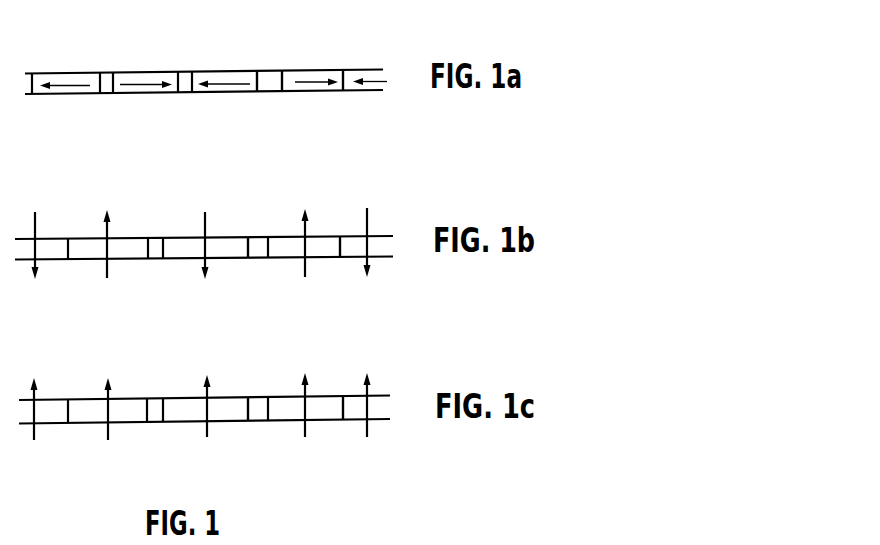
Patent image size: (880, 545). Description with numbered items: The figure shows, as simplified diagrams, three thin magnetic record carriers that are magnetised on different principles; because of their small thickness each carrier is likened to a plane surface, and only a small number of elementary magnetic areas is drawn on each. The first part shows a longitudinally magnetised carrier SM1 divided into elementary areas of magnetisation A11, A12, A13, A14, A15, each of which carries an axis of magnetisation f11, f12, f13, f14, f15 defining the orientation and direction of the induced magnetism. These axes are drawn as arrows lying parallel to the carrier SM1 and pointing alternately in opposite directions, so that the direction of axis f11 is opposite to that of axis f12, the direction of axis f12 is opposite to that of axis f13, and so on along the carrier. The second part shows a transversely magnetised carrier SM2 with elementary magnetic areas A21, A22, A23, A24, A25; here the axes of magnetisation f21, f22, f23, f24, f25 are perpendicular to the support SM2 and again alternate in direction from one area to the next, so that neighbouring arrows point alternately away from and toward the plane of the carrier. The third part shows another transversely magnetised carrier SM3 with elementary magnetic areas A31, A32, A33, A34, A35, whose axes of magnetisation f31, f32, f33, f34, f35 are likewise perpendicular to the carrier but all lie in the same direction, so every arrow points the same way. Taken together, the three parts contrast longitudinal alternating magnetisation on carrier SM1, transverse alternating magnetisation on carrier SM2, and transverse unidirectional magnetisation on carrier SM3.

In FIG. 1A, the elementary area of magnetisation A11 is at (45, 73).
In FIG. 1A, the elementary area of magnetisation A12 is at (128, 72).
In FIG. 1A, the elementary area of magnetisation A13 is at (203, 71).
In FIG. 1A, the elementary area of magnetisation A14 is at (302, 70).
In FIG. 1A, the elementary area of magnetisation A15 is at (355, 70).
In FIG. 1A, the longitudinally magnetised carrier SM1 is at (258, 71).
In FIG. 1A, the axis of magnetisation f11 is at (68, 87).
In FIG. 1A, the axis of magnetisation f12 is at (130, 86).
In FIG. 1A, the axis of magnetisation f13 is at (221, 85).
In FIG. 1A, the axis of magnetisation f14 is at (298, 83).
In FIG. 1A, the axis of magnetisation f15 is at (375, 83).
In FIG. 1B, the elementary magnetic area A21 is at (48, 238).
In FIG. 1B, the elementary magnetic area A22 is at (100, 238).
In FIG. 1B, the elementary magnetic area A23 is at (183, 238).
In FIG. 1B, the elementary magnetic area A24 is at (320, 236).
In FIG. 1B, the elementary magnetic area A25 is at (378, 236).
In FIG. 1B, the transversely magnetised carrier SM2 is at (240, 236).
In FIG. 1B, the axis of magnetisation f21 is at (40, 267).
In FIG. 1B, the axis of magnetisation f22 is at (108, 264).
In FIG. 1B, the axis of magnetisation f23 is at (210, 265).
In FIG. 1B, the axis of magnetisation f24 is at (307, 265).
In FIG. 1B, the axis of magnetisation f25 is at (371, 265).
In FIG. 1C, the elementary magnetic area A31 is at (44, 425).
In FIG. 1C, the elementary magnetic area A32 is at (122, 425).
In FIG. 1C, the elementary magnetic area A33 is at (217, 423).
In FIG. 1C, the elementary magnetic area A34 is at (317, 422).
In FIG. 1C, the elementary magnetic area A35 is at (381, 421).
In FIG. 1C, the transversely magnetised carrier SM3 is at (242, 395).
In FIG. 1C, the axis of magnetisation f31 is at (40, 391).
In FIG. 1C, the axis of magnetisation f32 is at (113, 391).
In FIG. 1C, the axis of magnetisation f33 is at (211, 388).
In FIG. 1C, the axis of magnetisation f34 is at (312, 388).
In FIG. 1C, the axis of magnetisation f35 is at (372, 388).